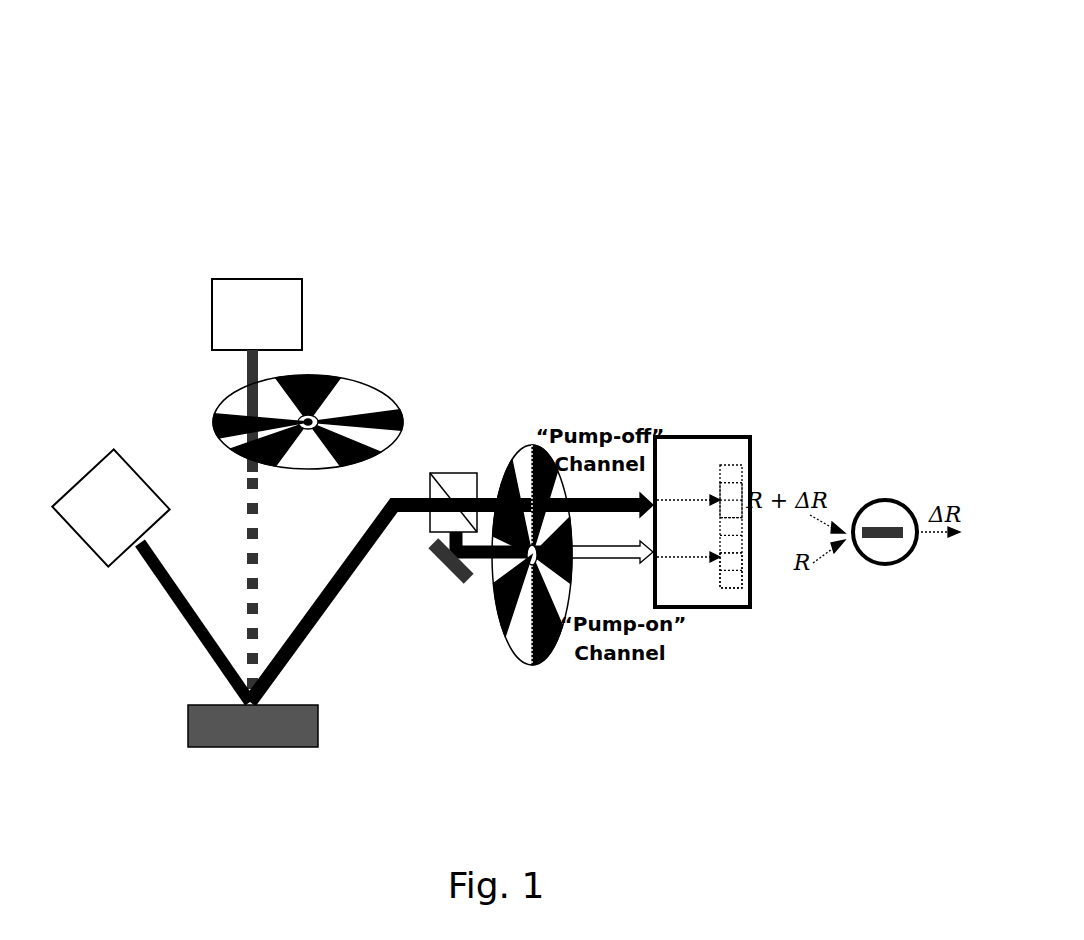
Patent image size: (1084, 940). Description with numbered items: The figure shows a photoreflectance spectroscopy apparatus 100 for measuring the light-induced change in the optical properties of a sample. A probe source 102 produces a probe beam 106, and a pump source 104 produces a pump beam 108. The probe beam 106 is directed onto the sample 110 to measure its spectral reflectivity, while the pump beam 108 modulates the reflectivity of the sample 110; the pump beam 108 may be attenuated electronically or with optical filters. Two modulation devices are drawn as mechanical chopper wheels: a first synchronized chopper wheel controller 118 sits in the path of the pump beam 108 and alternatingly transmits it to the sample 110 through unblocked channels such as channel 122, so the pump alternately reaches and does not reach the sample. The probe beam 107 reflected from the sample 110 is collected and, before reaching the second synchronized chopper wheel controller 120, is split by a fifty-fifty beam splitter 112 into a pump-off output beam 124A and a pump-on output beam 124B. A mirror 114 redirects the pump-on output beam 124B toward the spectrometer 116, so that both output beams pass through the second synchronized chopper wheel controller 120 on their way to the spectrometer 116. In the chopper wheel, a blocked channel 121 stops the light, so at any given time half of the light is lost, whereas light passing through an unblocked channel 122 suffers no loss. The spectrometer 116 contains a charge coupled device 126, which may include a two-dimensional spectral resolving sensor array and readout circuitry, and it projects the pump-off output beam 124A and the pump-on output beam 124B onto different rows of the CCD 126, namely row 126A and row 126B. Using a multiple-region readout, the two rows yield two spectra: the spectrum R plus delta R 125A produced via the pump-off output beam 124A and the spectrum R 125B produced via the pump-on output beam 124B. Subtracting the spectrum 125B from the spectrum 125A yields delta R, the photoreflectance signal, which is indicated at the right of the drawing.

The photoreflectance spectroscopy apparatus 100 is at (611, 105).
The probe source 102 is at (83, 478).
The pump source 104 is at (210, 305).
The probe beam 106 is at (188, 615).
The probe beam reflecting from the sample 107 is at (313, 615).
The pump beam 108 is at (248, 363).
The sample 110 is at (215, 708).
The beam splitter 112 is at (454, 473).
The mirror 114 is at (457, 562).
The spectrometer 116 is at (678, 437).
The first synchronized chopper wheel controller 118 is at (313, 380).
The second synchronized chopper wheel controller 120 is at (532, 445).
The blocked channel 121 is at (498, 612).
The unblocked channel 122 is at (240, 433).
The pump-off output beam 124A is at (490, 493).
The pump-on output beam 124B is at (450, 535).
The spectrum (R+ΔR) 125A is at (793, 485).
The spectrum (R) 125B is at (818, 570).
The charge coupled device 126 is at (737, 473).
The row 126A is at (735, 488).
The row 126B is at (732, 560).